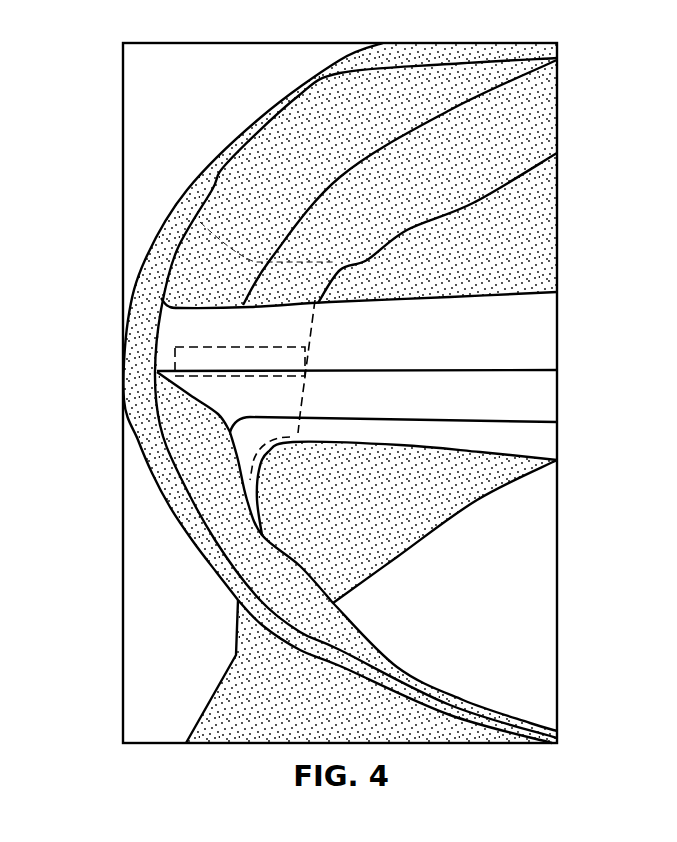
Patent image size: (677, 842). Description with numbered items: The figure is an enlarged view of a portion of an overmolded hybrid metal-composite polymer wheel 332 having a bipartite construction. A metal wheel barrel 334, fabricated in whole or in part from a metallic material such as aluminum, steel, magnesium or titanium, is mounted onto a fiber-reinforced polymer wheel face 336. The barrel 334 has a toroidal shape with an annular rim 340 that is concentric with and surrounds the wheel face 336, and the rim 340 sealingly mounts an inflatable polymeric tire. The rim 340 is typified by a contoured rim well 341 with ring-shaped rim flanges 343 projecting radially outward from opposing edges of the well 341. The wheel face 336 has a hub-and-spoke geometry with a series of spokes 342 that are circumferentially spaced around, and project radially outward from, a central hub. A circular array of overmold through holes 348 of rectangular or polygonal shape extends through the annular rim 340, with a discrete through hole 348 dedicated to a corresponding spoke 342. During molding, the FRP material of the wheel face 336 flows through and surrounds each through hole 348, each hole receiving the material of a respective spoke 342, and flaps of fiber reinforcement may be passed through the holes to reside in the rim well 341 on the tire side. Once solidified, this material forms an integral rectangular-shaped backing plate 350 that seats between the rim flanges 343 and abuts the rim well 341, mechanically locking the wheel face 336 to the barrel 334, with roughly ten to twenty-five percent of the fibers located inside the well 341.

The hybrid metal-composite polymer wheel 332 is at (153, 75).
The wheel barrel 334 is at (177, 198).
The wheel face 336 is at (223, 173).
The annular rim 340 is at (152, 368).
The rim well 341 is at (233, 650).
The spoke 342 is at (493, 312).
The rim flange 343 is at (168, 508).
The overmold through hole 348 is at (215, 346).
The backing plate 350 is at (250, 457).